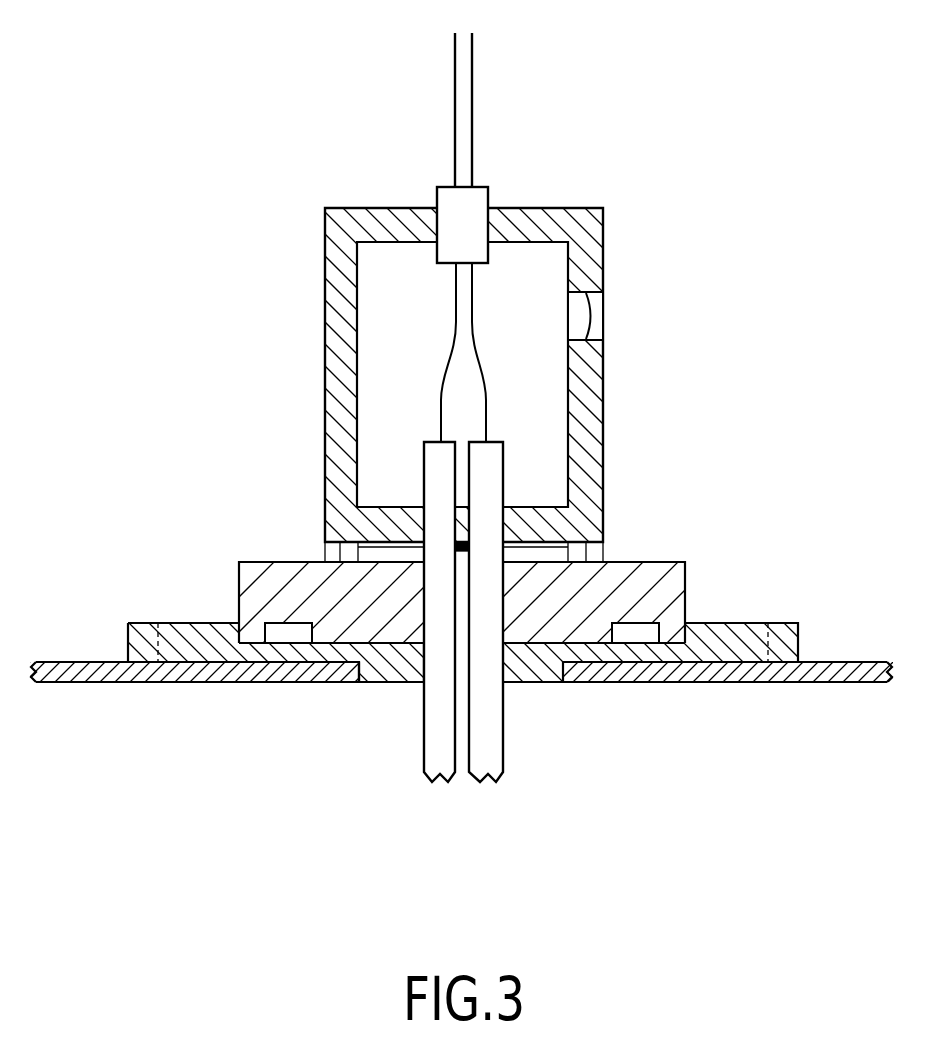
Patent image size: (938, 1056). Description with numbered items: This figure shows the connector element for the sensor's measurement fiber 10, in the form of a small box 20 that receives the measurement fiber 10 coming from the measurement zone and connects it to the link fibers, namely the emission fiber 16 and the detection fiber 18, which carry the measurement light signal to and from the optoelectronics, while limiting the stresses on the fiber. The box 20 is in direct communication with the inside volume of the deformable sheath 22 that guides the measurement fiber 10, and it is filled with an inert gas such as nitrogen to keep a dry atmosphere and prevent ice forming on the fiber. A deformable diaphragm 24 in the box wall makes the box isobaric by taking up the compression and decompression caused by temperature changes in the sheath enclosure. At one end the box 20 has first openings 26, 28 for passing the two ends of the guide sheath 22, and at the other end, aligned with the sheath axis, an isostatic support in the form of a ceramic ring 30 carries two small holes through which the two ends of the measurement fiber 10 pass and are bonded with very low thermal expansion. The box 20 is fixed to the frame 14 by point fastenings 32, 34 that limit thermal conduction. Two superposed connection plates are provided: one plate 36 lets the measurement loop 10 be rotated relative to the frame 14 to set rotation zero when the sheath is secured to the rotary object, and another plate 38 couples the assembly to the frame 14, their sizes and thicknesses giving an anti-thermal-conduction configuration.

The measurement fiber 10 is at (440, 388).
The frame 14 is at (88, 662).
The emission fiber 16 is at (453, 97).
The detection fiber 18 is at (473, 106).
The box 20 is at (600, 390).
The deformable sheath 22 is at (490, 603).
The deformable diaphragm 24 is at (593, 318).
The first opening 26 is at (435, 469).
The first opening 28 is at (490, 470).
The ceramic ring 30 is at (480, 202).
The point fastening 32 is at (348, 549).
The point fastening 34 is at (158, 620).
The connection plate 36 is at (255, 577).
The connection plate 38 is at (202, 623).